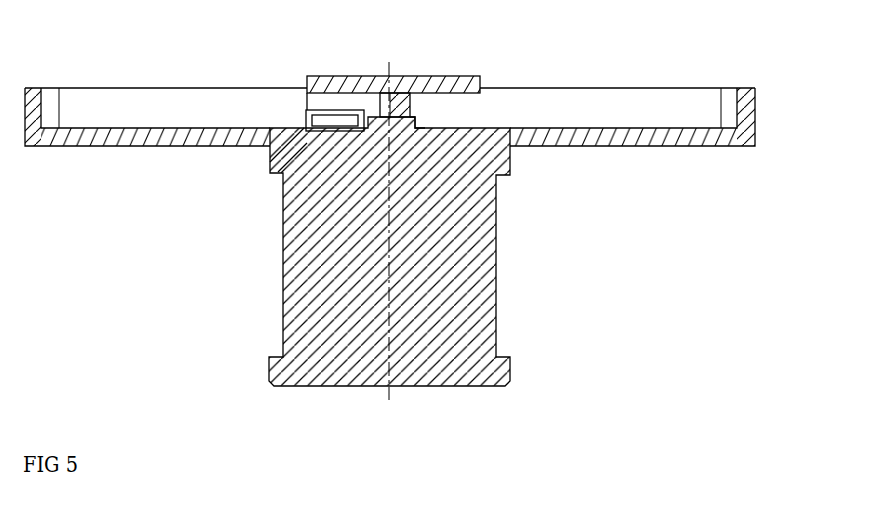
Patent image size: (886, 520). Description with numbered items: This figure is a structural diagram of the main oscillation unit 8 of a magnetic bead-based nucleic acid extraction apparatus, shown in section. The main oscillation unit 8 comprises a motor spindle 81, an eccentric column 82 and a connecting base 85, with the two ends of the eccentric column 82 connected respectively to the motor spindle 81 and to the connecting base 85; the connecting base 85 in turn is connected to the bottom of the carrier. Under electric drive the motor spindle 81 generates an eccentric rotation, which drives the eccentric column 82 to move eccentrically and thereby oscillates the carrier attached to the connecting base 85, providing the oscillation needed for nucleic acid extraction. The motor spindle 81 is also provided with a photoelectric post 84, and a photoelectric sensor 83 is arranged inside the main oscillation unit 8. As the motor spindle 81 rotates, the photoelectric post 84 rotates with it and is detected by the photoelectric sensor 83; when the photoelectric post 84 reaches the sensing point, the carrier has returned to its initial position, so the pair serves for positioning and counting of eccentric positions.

The main oscillation unit 8 is at (500, 272).
The motor spindle 81 is at (417, 125).
The eccentric column 82 is at (402, 106).
The photoelectric sensor 83 is at (299, 131).
The photoelectric post 84 is at (303, 104).
The connecting base 85 is at (411, 76).